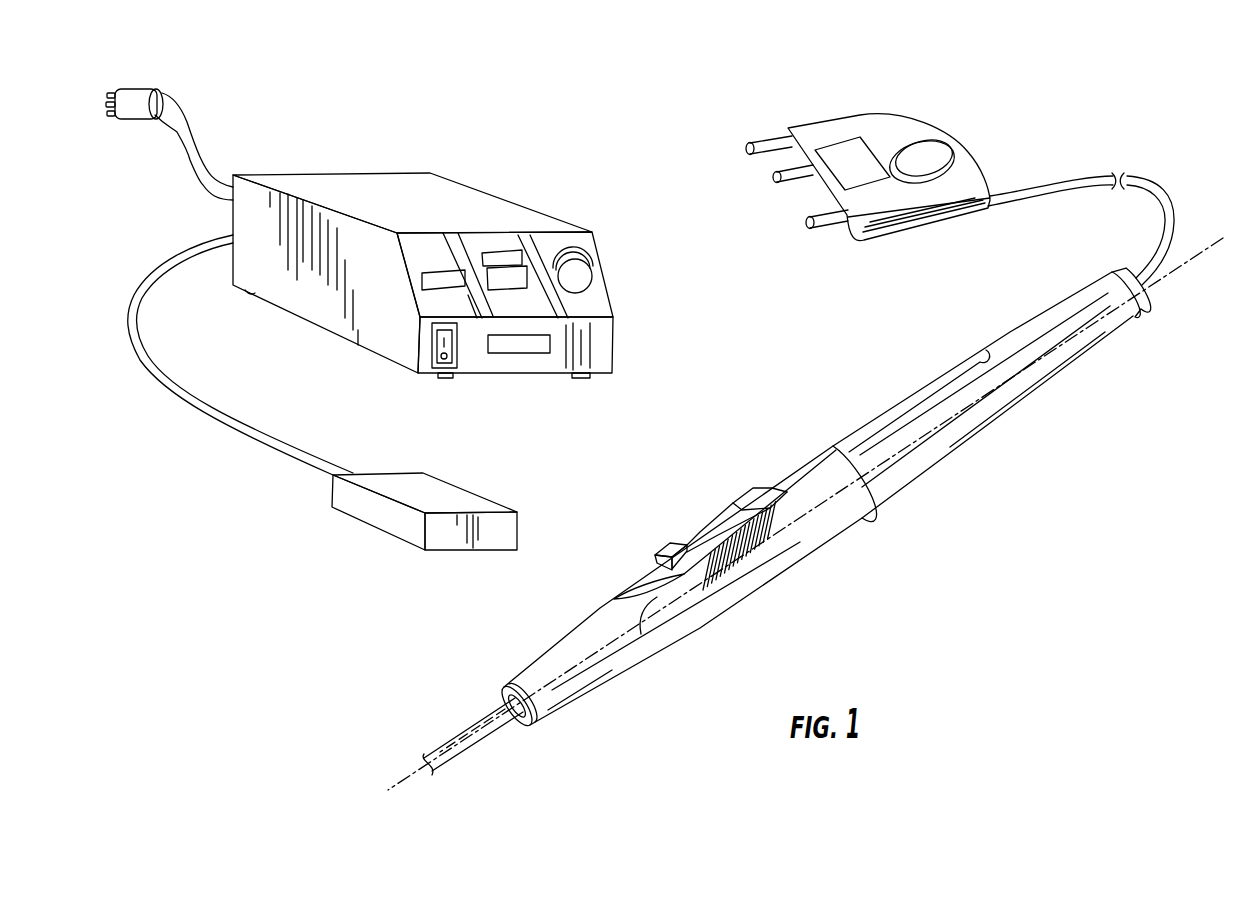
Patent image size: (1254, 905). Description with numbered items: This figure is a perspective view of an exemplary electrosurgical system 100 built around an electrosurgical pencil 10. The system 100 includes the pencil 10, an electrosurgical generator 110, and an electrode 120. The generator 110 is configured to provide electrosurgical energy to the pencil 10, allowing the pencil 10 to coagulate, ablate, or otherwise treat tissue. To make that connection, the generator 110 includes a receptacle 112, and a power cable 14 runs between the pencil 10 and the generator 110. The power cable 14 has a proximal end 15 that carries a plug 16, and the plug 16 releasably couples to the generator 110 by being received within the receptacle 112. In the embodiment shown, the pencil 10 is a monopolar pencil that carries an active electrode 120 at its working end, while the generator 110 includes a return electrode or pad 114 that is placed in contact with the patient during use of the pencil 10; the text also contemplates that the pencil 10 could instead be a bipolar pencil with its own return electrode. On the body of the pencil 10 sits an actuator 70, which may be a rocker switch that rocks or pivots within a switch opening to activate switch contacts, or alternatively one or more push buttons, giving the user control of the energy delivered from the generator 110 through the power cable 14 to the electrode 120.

The electrosurgical system 100 is at (611, 86).
The electrosurgical generator 110 is at (470, 178).
The receptacle 112 is at (515, 356).
The return electrode or pad 114 is at (490, 542).
The plug 16 is at (882, 122).
The proximal end 15 is at (1046, 180).
The power cable 14 is at (1178, 206).
The electrosurgical pencil 10 is at (1010, 422).
The actuator 70 is at (682, 543).
The electrode 120 is at (466, 737).